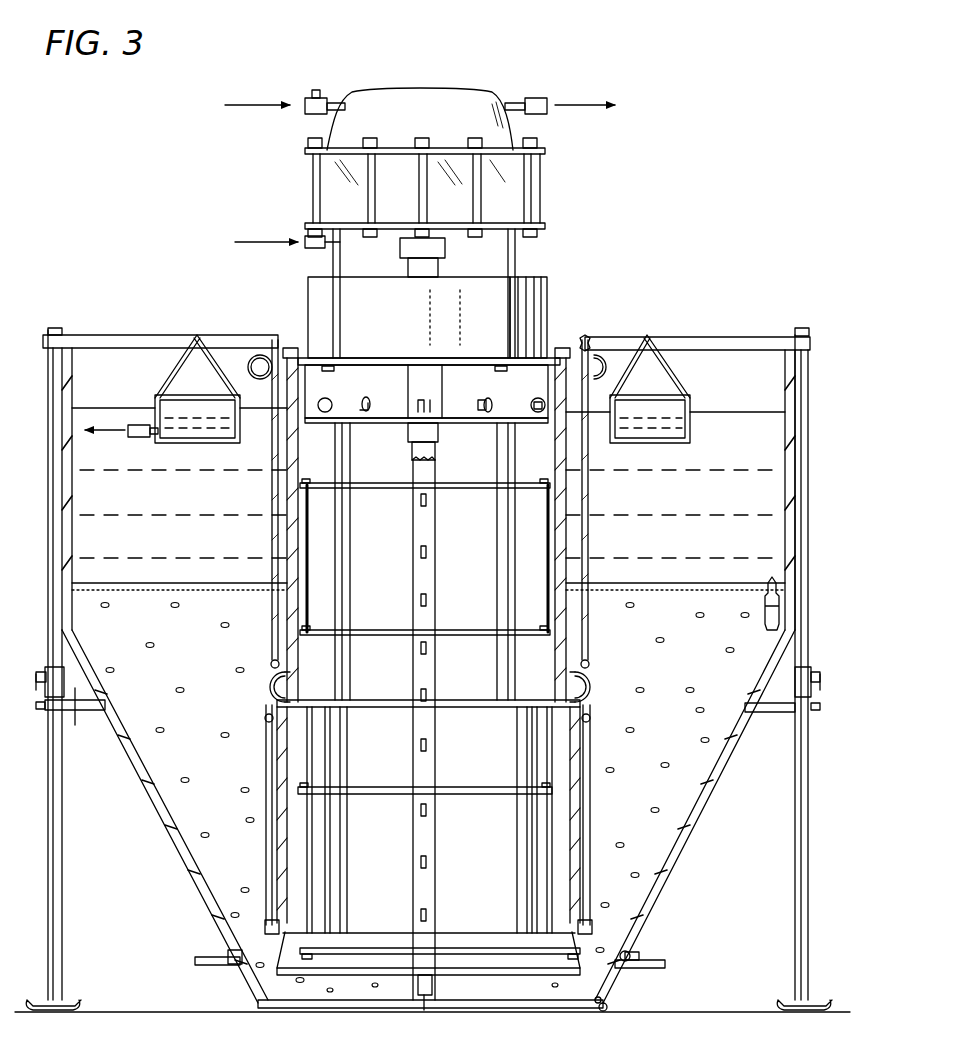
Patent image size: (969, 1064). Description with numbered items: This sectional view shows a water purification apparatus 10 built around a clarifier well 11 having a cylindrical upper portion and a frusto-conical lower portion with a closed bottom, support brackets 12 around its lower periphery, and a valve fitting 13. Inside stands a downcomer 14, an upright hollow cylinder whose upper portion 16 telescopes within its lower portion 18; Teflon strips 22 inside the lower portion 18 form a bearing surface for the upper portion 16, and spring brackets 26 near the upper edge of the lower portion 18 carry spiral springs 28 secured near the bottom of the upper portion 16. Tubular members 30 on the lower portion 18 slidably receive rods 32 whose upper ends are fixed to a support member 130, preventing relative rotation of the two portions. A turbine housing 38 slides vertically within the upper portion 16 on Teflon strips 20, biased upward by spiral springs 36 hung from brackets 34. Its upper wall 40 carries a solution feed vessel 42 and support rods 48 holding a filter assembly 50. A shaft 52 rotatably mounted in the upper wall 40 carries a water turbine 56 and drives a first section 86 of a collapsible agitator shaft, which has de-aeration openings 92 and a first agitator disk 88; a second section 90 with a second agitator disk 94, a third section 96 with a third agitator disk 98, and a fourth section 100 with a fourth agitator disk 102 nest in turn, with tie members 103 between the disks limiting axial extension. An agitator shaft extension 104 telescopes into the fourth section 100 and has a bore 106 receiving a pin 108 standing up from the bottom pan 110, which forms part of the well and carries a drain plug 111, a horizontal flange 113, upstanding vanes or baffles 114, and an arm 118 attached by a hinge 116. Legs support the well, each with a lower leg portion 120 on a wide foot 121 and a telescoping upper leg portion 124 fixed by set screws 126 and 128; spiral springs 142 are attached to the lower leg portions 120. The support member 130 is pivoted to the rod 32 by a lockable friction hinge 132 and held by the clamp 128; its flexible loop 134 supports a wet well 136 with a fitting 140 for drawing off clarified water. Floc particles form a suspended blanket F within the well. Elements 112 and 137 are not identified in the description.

The water purification apparatus 10 is at (640, 68).
The clarifier well 11 is at (62, 552).
The support brackets 12 is at (58, 350).
The valve fitting 13 is at (766, 636).
The downcomer 14 is at (603, 650).
The upper portion 16 is at (568, 552).
The lower portion 18 is at (575, 822).
The Teflon strips 20 is at (345, 462).
The Teflon strips 22 is at (340, 830).
The spring brackets 26 is at (596, 690).
The spiral springs 28 is at (590, 720).
The tubular members 30 is at (270, 852).
The rods 32 is at (270, 532).
The brackets 34 is at (258, 345).
The spiral springs 36 is at (262, 355).
The turbine housing 38 is at (426, 394).
The upper wall 40 is at (368, 358).
The solution feed vessel 42 is at (545, 282).
The support rods 48 is at (340, 333).
The filter assembly 50 is at (300, 180).
The shaft 52 is at (425, 391).
The water turbine 56 is at (452, 414).
The first section of agitator shaft 86 is at (440, 455).
The first agitator disk 88 is at (405, 483).
The second section of agitator shaft 90 is at (433, 580).
The de-aeration openings 92 is at (428, 500).
The second agitator disk 94 is at (405, 630).
The third section of agitator shaft 96 is at (432, 765).
The third agitator disk 98 is at (460, 787).
The fourth section of agitator shaft 100 is at (430, 882).
The fourth agitator disk 102 is at (440, 948).
The tie members 103 is at (303, 486).
The agitator shaft extension 104 is at (436, 966).
The bore 106 is at (418, 985).
The pin 108 is at (420, 1008).
The bottom pan 110 is at (335, 1010).
The drain plug 111 is at (606, 1012).
The bracket 112 is at (658, 968).
The flange 113 is at (222, 965).
The vanes or baffles 114 is at (582, 1000).
The hinge 116 is at (632, 955).
The arm 118 is at (665, 896).
The lower leg portion 120 is at (800, 935).
The foot 121 is at (790, 1003).
The upper leg portion 124 is at (803, 430).
The clamp or hand-operated set screw 126 is at (822, 674).
The clamp or hand-operated set screw 128 is at (802, 328).
The support member 130 is at (728, 340).
The friction hinge 132 is at (588, 336).
The flexible loop 134 is at (678, 386).
The wet well 136 is at (690, 440).
The bucket rim 137 is at (692, 410).
The fitting 140 is at (148, 438).
The spiral springs 142 is at (65, 670).
The floc blanket F is at (678, 584).